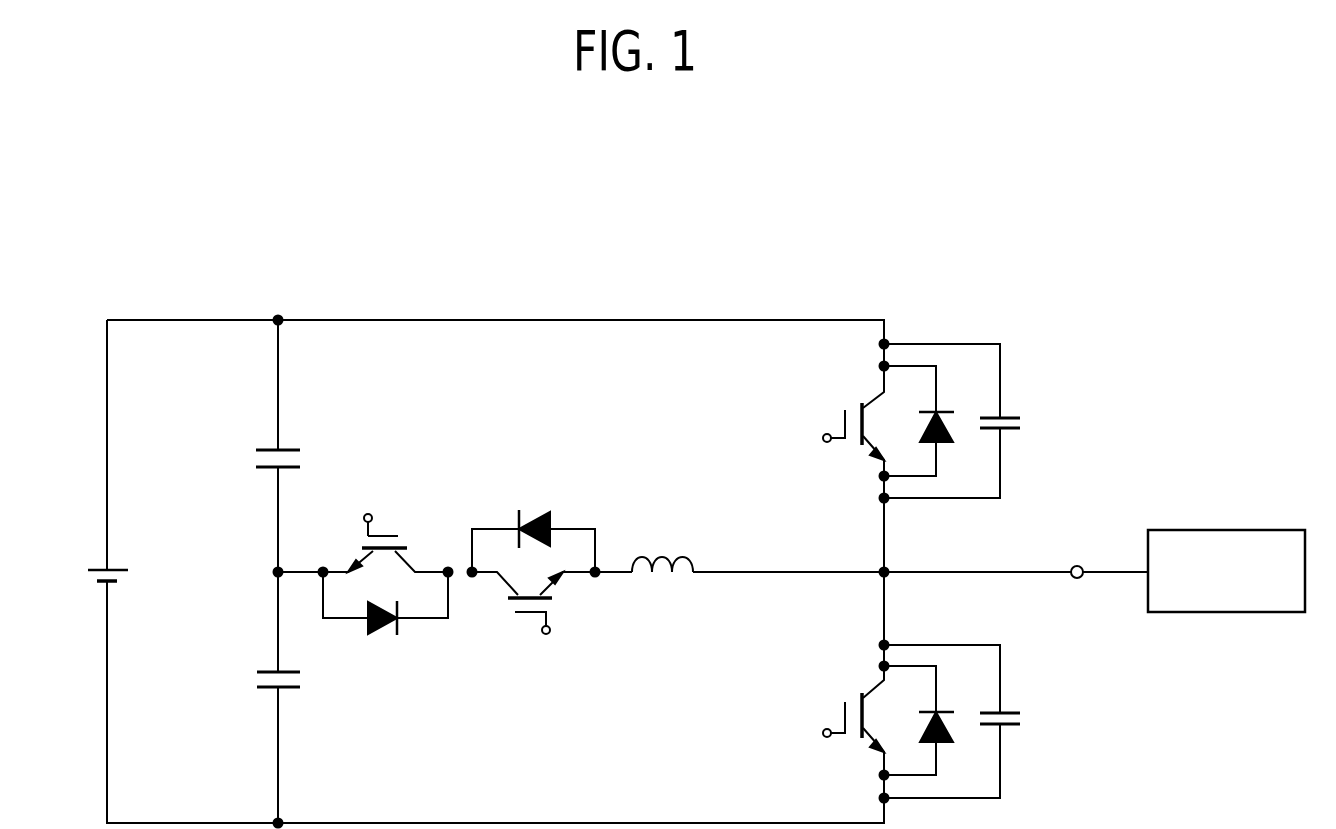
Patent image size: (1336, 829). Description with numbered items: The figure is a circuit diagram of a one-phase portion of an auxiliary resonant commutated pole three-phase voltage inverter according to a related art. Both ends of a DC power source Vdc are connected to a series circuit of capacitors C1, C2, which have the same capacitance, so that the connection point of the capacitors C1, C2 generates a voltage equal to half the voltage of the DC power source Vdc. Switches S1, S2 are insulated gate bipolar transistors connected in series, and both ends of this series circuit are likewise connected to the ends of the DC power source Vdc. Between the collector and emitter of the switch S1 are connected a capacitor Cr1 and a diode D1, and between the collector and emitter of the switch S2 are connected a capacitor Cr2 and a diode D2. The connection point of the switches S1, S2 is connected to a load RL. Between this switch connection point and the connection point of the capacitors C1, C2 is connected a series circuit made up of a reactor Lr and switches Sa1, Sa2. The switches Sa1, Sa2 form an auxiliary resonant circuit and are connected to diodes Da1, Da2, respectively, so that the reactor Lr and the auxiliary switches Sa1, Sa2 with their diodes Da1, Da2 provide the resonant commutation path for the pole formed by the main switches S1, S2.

The DC power source Vdc is at (80, 550).
The capacitor C1 is at (294, 446).
The capacitor C2 is at (295, 697).
The switch Sa1 is at (385, 532).
The diode Da1 is at (385, 631).
The diode Da2 is at (533, 515).
The switch Sa2 is at (533, 626).
The reactor Lr is at (662, 596).
The switch S1 is at (844, 418).
The diode D1 is at (933, 419).
The capacitor Cr1 is at (969, 421).
The switch S2 is at (844, 726).
The diode D2 is at (935, 729).
The capacitor Cr2 is at (971, 721).
The load RL is at (1205, 530).